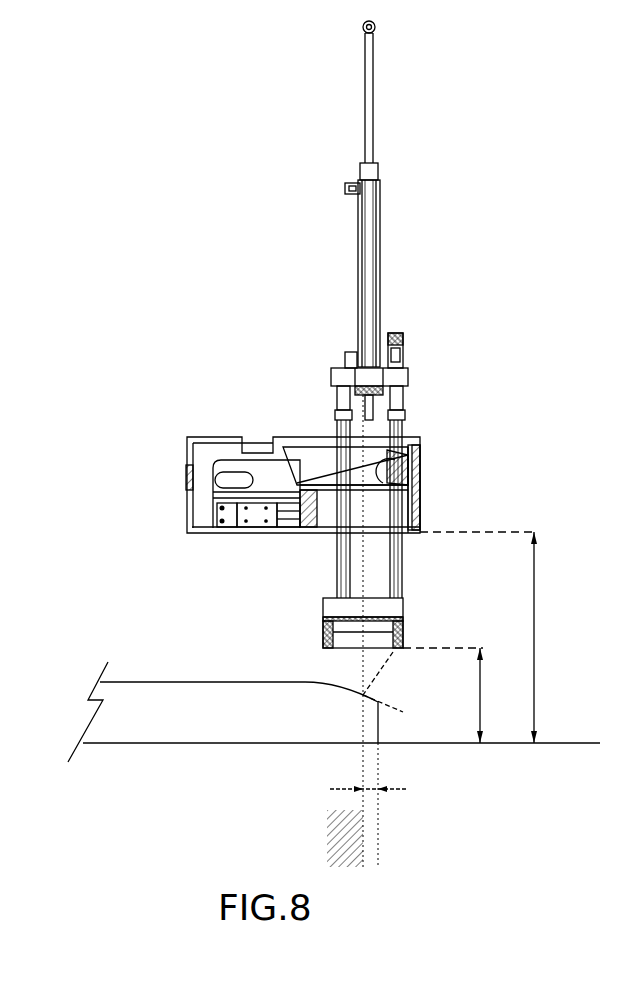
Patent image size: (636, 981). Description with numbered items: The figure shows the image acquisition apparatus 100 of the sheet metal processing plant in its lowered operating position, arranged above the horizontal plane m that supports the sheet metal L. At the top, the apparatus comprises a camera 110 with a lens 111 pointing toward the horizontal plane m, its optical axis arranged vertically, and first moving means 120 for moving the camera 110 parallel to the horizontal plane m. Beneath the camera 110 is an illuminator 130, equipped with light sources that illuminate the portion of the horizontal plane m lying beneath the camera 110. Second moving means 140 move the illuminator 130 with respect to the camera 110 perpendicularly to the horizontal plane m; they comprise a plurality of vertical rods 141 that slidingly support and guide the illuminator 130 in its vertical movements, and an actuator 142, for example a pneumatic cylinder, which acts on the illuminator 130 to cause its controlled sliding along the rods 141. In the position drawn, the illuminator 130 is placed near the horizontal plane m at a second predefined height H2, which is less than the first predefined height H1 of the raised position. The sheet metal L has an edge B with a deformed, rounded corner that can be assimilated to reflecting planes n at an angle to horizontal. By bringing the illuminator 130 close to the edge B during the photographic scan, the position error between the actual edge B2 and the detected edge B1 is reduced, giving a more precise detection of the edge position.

The image acquisition apparatus 100 is at (512, 136).
The camera 110 is at (417, 455).
The lens 111 is at (417, 508).
The first moving means 120 is at (174, 492).
The illuminator 130 is at (325, 635).
The second moving means 140 is at (396, 277).
The vertical rods 141 is at (335, 553).
The actuator 142 is at (333, 268).
The sheet metal L is at (137, 720).
The horizontal plane m is at (600, 743).
The reflecting planes n is at (404, 711).
The edges B is at (406, 729).
The detected edge B1 is at (363, 865).
The actual edge B2 is at (378, 850).
The first predefined height H1 is at (495, 637).
The second predefined height H2 is at (462, 695).